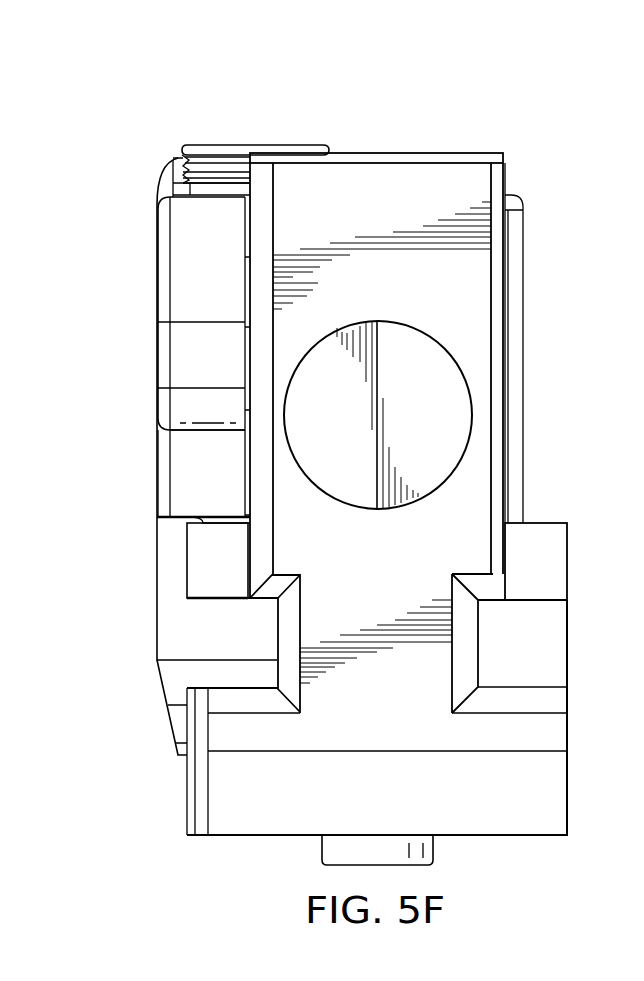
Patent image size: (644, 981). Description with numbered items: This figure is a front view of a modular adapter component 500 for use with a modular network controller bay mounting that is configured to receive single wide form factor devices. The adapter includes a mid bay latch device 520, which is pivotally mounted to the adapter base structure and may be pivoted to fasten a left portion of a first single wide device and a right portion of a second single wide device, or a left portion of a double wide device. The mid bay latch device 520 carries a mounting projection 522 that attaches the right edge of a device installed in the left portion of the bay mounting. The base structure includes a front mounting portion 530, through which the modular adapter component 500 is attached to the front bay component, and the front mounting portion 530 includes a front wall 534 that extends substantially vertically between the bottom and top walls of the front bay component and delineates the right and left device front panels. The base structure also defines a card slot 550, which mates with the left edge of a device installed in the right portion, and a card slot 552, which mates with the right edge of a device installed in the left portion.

The modular adapter component 500 is at (168, 76).
The mid bay latch device 520 is at (158, 229).
The mounting projection 522 is at (172, 632).
The front mounting portion 530 is at (472, 130).
The front wall 534 is at (385, 155).
The card slot 550 is at (532, 600).
The card slot 552 is at (223, 600).